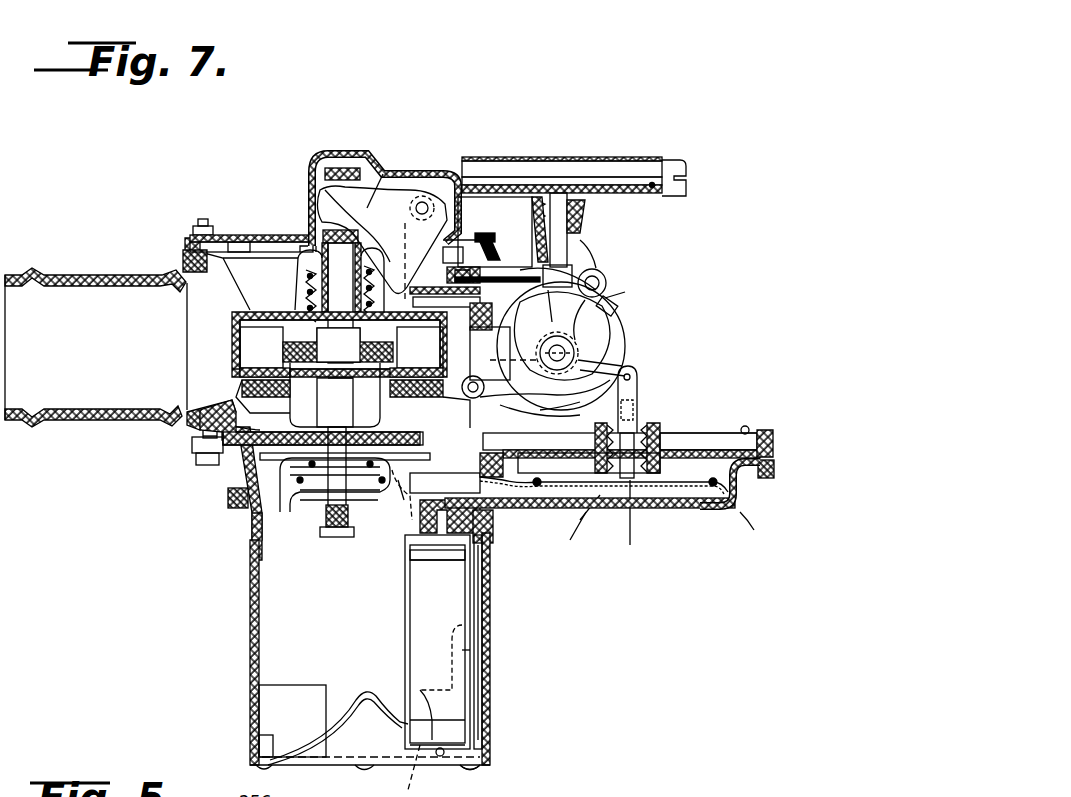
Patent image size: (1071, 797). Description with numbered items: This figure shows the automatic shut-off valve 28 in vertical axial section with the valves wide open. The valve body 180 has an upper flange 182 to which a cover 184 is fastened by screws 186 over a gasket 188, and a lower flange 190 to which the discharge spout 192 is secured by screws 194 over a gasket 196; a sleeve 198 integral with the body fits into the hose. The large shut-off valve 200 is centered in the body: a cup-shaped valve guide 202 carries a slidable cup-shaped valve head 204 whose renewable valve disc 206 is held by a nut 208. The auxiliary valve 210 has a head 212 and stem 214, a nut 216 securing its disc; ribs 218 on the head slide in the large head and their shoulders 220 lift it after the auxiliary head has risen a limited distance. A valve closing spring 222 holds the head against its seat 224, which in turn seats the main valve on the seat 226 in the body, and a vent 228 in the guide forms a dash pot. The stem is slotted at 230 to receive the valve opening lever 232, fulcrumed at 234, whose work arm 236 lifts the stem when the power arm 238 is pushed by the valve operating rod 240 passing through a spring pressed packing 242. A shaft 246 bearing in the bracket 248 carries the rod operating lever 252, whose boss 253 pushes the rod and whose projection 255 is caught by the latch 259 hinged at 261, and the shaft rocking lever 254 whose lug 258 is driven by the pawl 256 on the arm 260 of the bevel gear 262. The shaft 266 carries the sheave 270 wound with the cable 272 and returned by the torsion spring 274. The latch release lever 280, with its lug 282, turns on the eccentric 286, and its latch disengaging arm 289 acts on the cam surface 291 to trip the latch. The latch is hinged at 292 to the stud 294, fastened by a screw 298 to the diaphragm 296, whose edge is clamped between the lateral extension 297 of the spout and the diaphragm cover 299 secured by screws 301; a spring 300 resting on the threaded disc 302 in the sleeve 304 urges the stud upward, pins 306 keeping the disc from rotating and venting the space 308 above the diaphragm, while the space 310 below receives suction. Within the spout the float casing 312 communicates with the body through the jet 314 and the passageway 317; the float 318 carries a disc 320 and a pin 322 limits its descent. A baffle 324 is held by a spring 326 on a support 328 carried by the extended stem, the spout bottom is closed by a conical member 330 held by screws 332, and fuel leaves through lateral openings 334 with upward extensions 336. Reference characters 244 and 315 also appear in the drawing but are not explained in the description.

The automatic shut-off valve 28 is at (486, 148).
The valve body 180 is at (200, 408).
The upper flange 182 is at (205, 292).
The cover 184 is at (232, 242).
The screws 186 is at (194, 228).
The gasket 188 is at (183, 262).
The lower flange 190 is at (200, 432).
The discharge spout 192 is at (246, 478).
The screws 194 is at (194, 466).
The gasket 196 is at (242, 400).
The sleeve 198 is at (70, 425).
The shut-off valve 200 is at (232, 352).
The valve guide 202 is at (232, 318).
The valve head 204 is at (250, 338).
The renewable valve disc 206 is at (292, 358).
The nut 208 is at (270, 400).
The auxiliary valve 210 is at (398, 340).
The head 212 is at (338, 303).
The stem 214 is at (310, 238).
The nut 216 is at (440, 299).
The ribs 218 is at (360, 398).
The shoulders 220 is at (425, 412).
The valve closing spring 222 is at (312, 274).
The seat 224 is at (400, 370).
The seat 226 is at (338, 345).
The vent 228 is at (306, 300).
The slot 230 is at (316, 214).
The valve opening lever 232 is at (383, 172).
The fulcrum 234 is at (424, 196).
The work arm 236 is at (312, 176).
The power arm 238 is at (382, 243).
The valve operating rod 240 is at (428, 280).
The spring pressed packing 242 is at (474, 232).
The cam assembly 244 is at (622, 272).
The shaft 246 is at (604, 346).
The bracket 248 is at (477, 316).
The rod operating lever 252 is at (612, 300).
The boss 253 is at (502, 238).
The shaft rocking lever 254 is at (622, 306).
The projection 255 is at (572, 404).
The pawl 256 is at (590, 262).
The lug 258 is at (497, 262).
The latch 259 is at (540, 434).
The arm 260 is at (600, 270).
The hinge 261 is at (472, 401).
The bevel gear 262 is at (600, 332).
The shaft 266 is at (582, 236).
The sheave 270 is at (642, 172).
The cable 272 is at (660, 190).
The torsion spring 274 is at (572, 196).
The latch release lever 280 is at (614, 340).
The lug 282 is at (528, 348).
The eccentric 286 is at (501, 353).
The latch disengaging arm 289 is at (530, 404).
The cam surface 291 is at (601, 369).
The hinge 292 is at (637, 384).
The stud 294 is at (638, 404).
The diaphragm 296 is at (694, 490).
The lateral extension 297 is at (752, 524).
The screw 298 is at (654, 521).
The diaphragm cover 299 is at (776, 436).
The spring 300 is at (652, 418).
The screws 301 is at (744, 426).
The externally threaded disc 302 is at (668, 434).
The internally threaded sleeve 304 is at (589, 448).
The pins 306 is at (599, 520).
The space 308 is at (754, 496).
The space 310 is at (590, 531).
The float casing 312 is at (406, 580).
The jet 314 is at (392, 506).
The bolt 315 is at (484, 538).
The passageway 317 is at (424, 490).
The float 318 is at (404, 610).
The disc 320 is at (404, 540).
The pin 322 is at (410, 680).
The baffle 324 is at (252, 512).
The spring 326 is at (284, 506).
The support 328 is at (352, 536).
The conical member 330 is at (336, 728).
The screws 332 is at (480, 768).
The lateral openings 334 is at (260, 707).
The upward extensions 336 is at (500, 638).